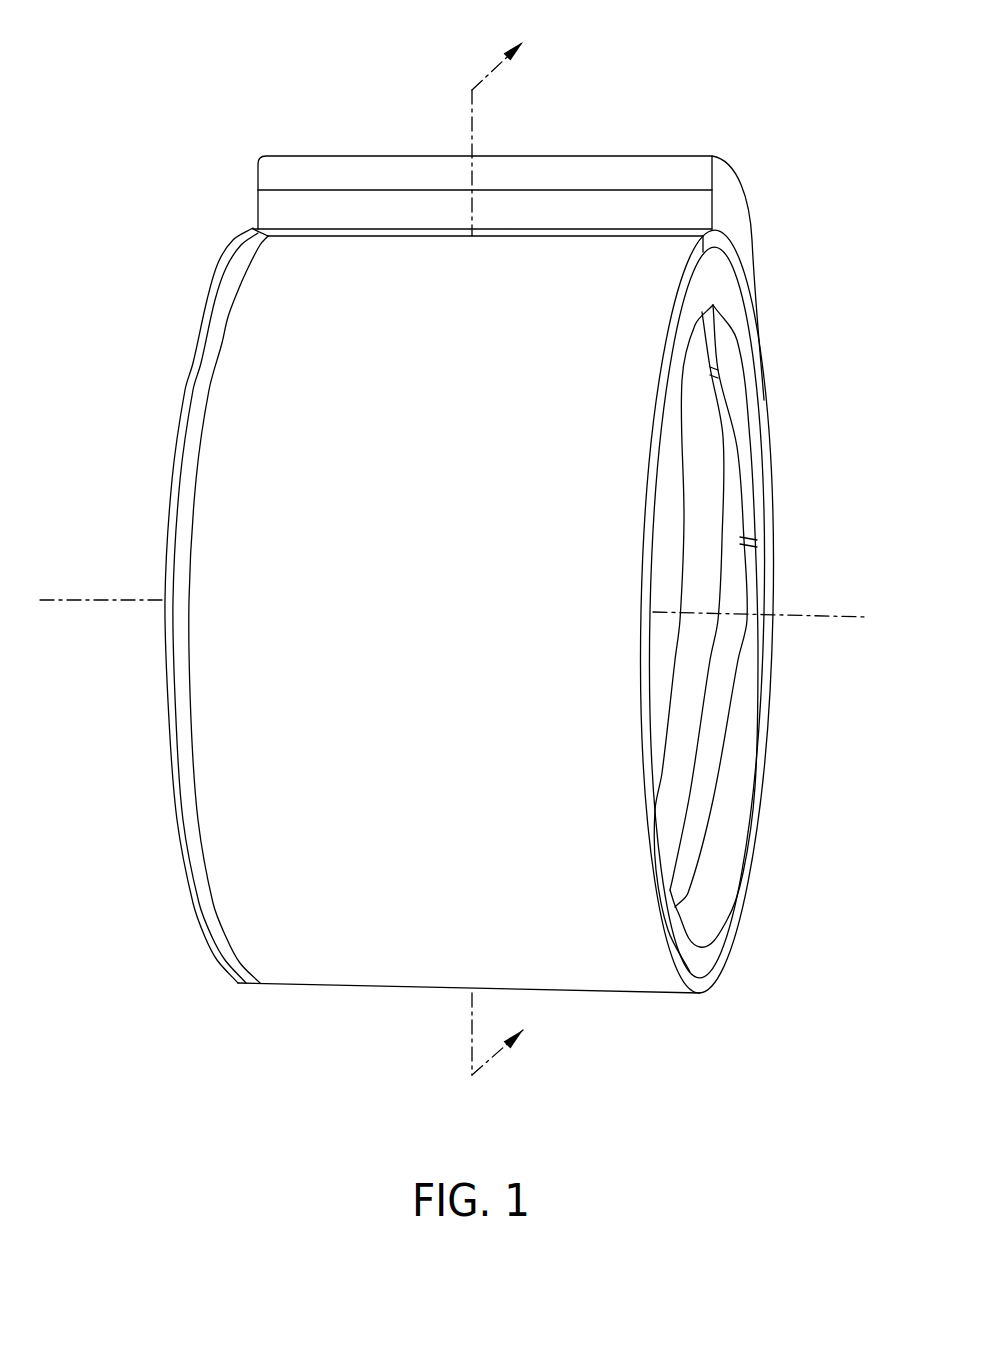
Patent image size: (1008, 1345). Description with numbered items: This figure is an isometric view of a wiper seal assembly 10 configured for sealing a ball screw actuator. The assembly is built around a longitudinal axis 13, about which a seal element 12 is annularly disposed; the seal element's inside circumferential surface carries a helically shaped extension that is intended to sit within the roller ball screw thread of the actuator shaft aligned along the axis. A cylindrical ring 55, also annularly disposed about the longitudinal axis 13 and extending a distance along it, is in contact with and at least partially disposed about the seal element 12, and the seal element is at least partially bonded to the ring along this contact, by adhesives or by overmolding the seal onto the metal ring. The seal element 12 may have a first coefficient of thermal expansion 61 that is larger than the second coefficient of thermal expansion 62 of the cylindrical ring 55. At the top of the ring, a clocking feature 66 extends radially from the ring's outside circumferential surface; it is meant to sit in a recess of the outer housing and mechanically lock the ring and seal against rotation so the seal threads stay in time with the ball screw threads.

The wiper seal assembly 10 is at (198, 78).
The seal element 12 is at (151, 605).
The first coefficient of thermal expansion 61 is at (197, 333).
The cylindrical ring 55 is at (509, 651).
The second coefficient of thermal expansion 62 is at (565, 922).
The clocking feature 66 is at (607, 158).
The longitudinal axis 13 is at (822, 614).